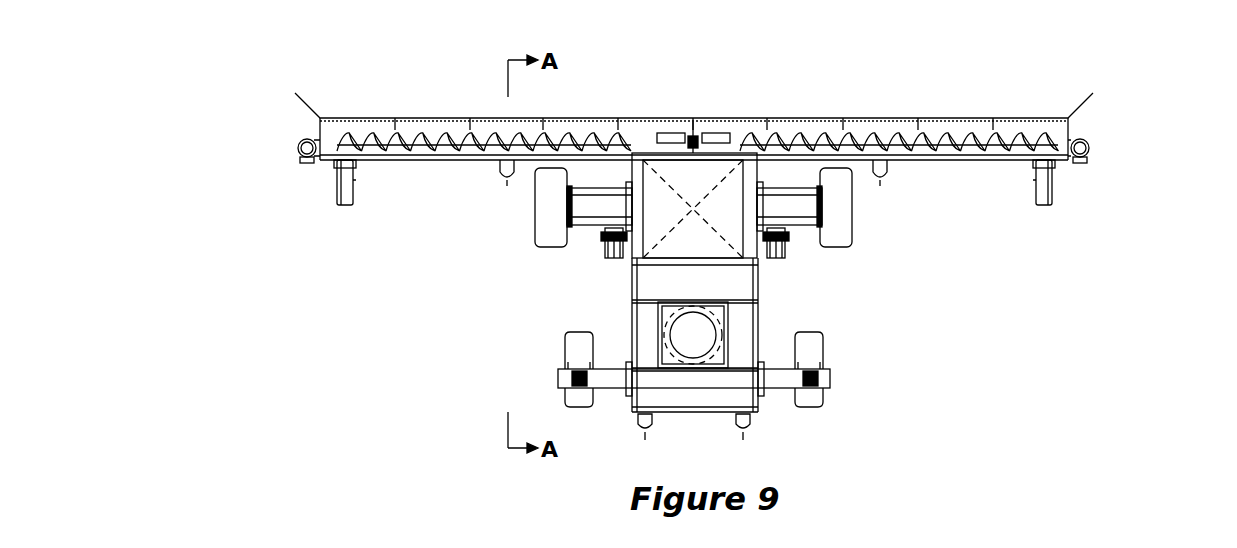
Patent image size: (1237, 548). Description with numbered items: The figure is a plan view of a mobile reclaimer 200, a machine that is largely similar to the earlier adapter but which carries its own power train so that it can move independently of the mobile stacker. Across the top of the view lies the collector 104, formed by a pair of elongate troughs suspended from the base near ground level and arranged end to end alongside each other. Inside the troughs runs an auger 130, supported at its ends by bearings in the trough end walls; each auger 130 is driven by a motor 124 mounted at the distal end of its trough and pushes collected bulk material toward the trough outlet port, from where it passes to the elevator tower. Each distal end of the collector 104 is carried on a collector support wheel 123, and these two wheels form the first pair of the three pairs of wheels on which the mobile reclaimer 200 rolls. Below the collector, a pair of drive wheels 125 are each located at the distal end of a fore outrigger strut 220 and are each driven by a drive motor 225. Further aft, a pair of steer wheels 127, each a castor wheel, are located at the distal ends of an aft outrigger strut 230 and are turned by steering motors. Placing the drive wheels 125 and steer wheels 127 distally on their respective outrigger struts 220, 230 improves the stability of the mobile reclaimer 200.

The mobile reclaimer 200 is at (1049, 82).
The collector 104 is at (948, 110).
The auger 130 is at (490, 150).
The motor 124 is at (300, 146).
The collector support wheel 123 is at (340, 195).
The fore outrigger strut 220 is at (602, 205).
The drive wheel 125 is at (545, 214).
The drive motor 225 is at (605, 252).
The steer wheel 127 is at (575, 350).
The aft outrigger strut 230 is at (613, 378).